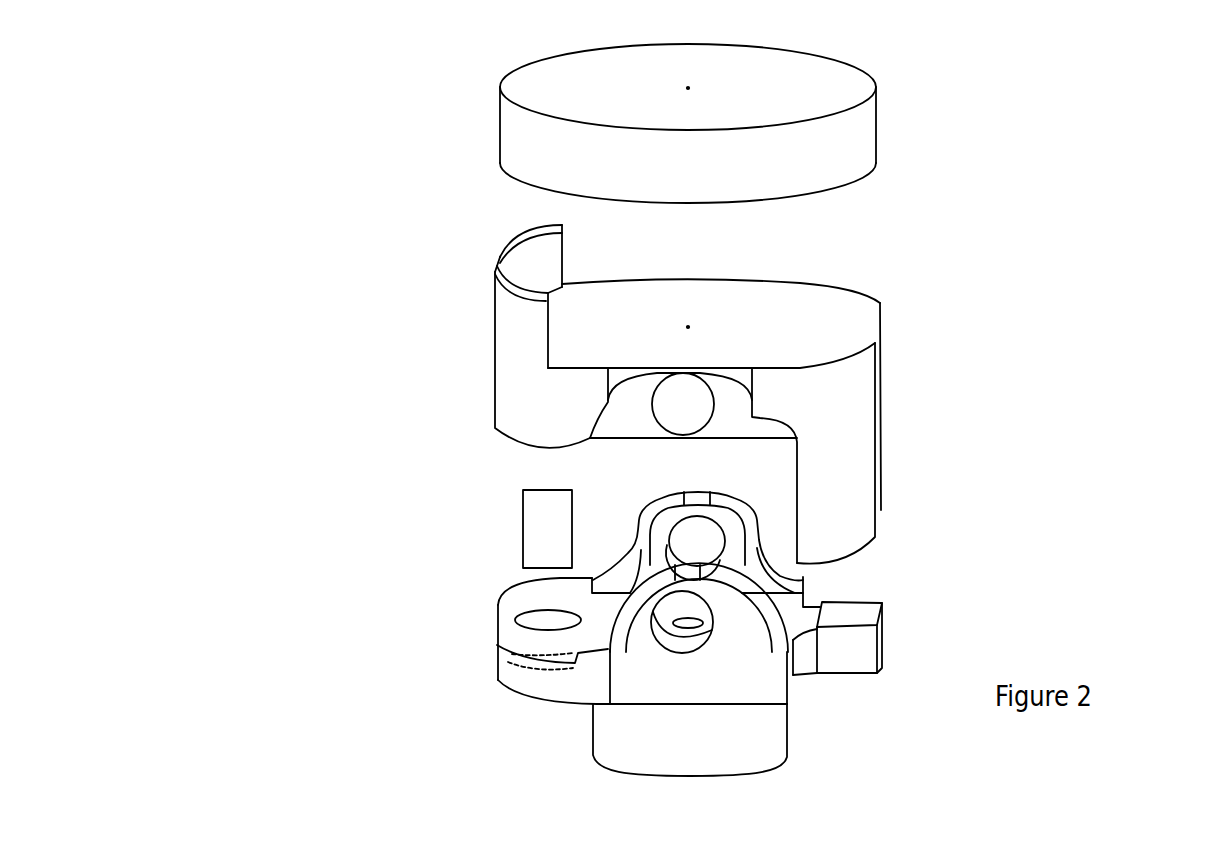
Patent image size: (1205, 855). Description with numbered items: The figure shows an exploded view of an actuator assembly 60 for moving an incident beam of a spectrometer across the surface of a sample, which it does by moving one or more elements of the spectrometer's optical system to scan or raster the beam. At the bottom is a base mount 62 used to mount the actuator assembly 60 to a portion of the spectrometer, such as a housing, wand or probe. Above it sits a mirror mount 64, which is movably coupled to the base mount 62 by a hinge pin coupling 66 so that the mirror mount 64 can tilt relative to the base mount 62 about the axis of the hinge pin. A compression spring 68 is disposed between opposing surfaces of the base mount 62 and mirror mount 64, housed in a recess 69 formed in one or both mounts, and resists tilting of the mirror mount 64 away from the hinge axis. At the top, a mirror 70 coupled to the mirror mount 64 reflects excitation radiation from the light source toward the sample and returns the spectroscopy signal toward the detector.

The actuator assembly 60 is at (192, 112).
The base mount 62 is at (562, 634).
The mirror mount 64 is at (902, 376).
The hinge pin coupling 66 is at (737, 555).
The compression spring 68 is at (513, 516).
The recess 69 is at (529, 620).
The mirror 70 is at (480, 147).